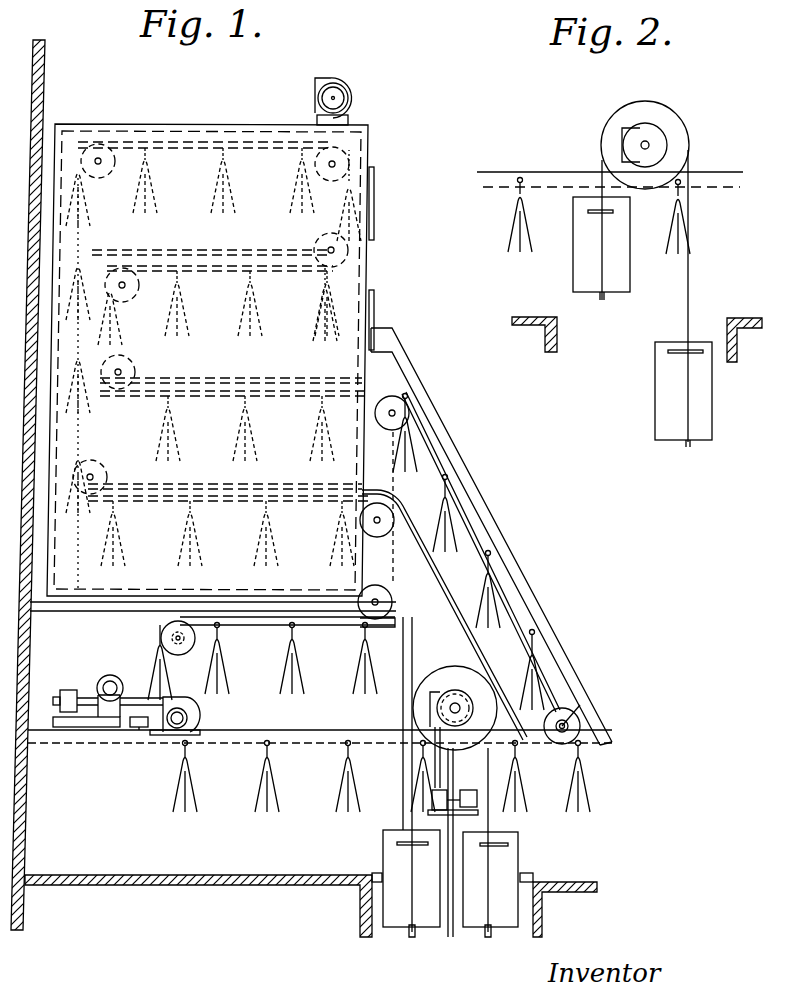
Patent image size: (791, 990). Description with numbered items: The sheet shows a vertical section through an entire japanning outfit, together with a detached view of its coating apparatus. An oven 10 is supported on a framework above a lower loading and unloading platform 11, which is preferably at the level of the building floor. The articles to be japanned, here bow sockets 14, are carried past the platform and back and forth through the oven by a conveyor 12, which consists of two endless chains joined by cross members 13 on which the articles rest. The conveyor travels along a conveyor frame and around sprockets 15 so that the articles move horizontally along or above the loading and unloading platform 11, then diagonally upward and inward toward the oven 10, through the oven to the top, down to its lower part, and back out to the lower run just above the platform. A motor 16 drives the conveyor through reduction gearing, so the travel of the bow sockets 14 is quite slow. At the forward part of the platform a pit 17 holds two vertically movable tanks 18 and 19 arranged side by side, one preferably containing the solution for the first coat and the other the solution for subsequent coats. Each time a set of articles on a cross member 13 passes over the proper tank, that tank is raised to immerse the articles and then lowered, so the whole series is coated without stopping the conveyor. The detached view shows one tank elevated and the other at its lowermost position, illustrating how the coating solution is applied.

In FIG. 1, the oven 10 is at (205, 125).
In FIG. 1, the loading and unloading platform 11 is at (128, 885).
In FIG. 1, the conveyor 12 is at (313, 744).
In FIG. 1, the cross members 13 is at (260, 747).
In FIG. 1, the bow sockets 14 is at (258, 782).
In FIG. 1, the sprockets 15 is at (157, 633).
In FIG. 1, the motor 16 is at (72, 690).
In FIG. 1, the pit 17 is at (367, 915).
In FIG. 2, the pit 17 is at (567, 352).
In FIG. 1, the tank 18 is at (393, 857).
In FIG. 2, the tank 18 is at (625, 300).
In FIG. 1, the tank 19 is at (520, 867).
In FIG. 2, the tank 19 is at (662, 430).